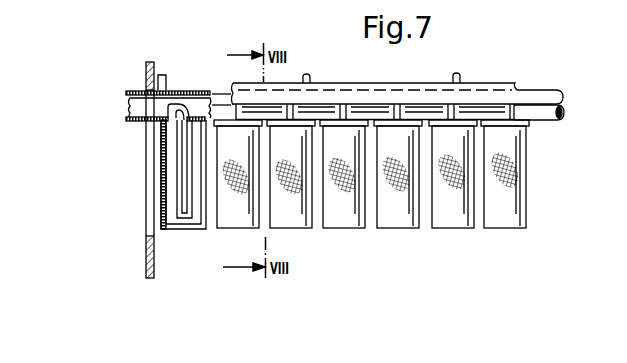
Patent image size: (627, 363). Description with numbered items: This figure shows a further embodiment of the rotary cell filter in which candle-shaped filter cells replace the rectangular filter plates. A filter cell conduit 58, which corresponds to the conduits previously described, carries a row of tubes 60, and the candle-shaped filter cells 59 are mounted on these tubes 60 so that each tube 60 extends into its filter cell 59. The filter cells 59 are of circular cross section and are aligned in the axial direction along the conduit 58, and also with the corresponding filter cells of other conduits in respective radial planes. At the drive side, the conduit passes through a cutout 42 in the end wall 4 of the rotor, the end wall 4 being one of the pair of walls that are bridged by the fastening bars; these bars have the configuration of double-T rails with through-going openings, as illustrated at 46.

The end wall 4 is at (145, 73).
The cutout 42 is at (143, 208).
The double-T rail 46 is at (181, 97).
The filter cell conduit 58 is at (551, 93).
The filter cell 59 is at (178, 231).
The tube 60 is at (183, 175).